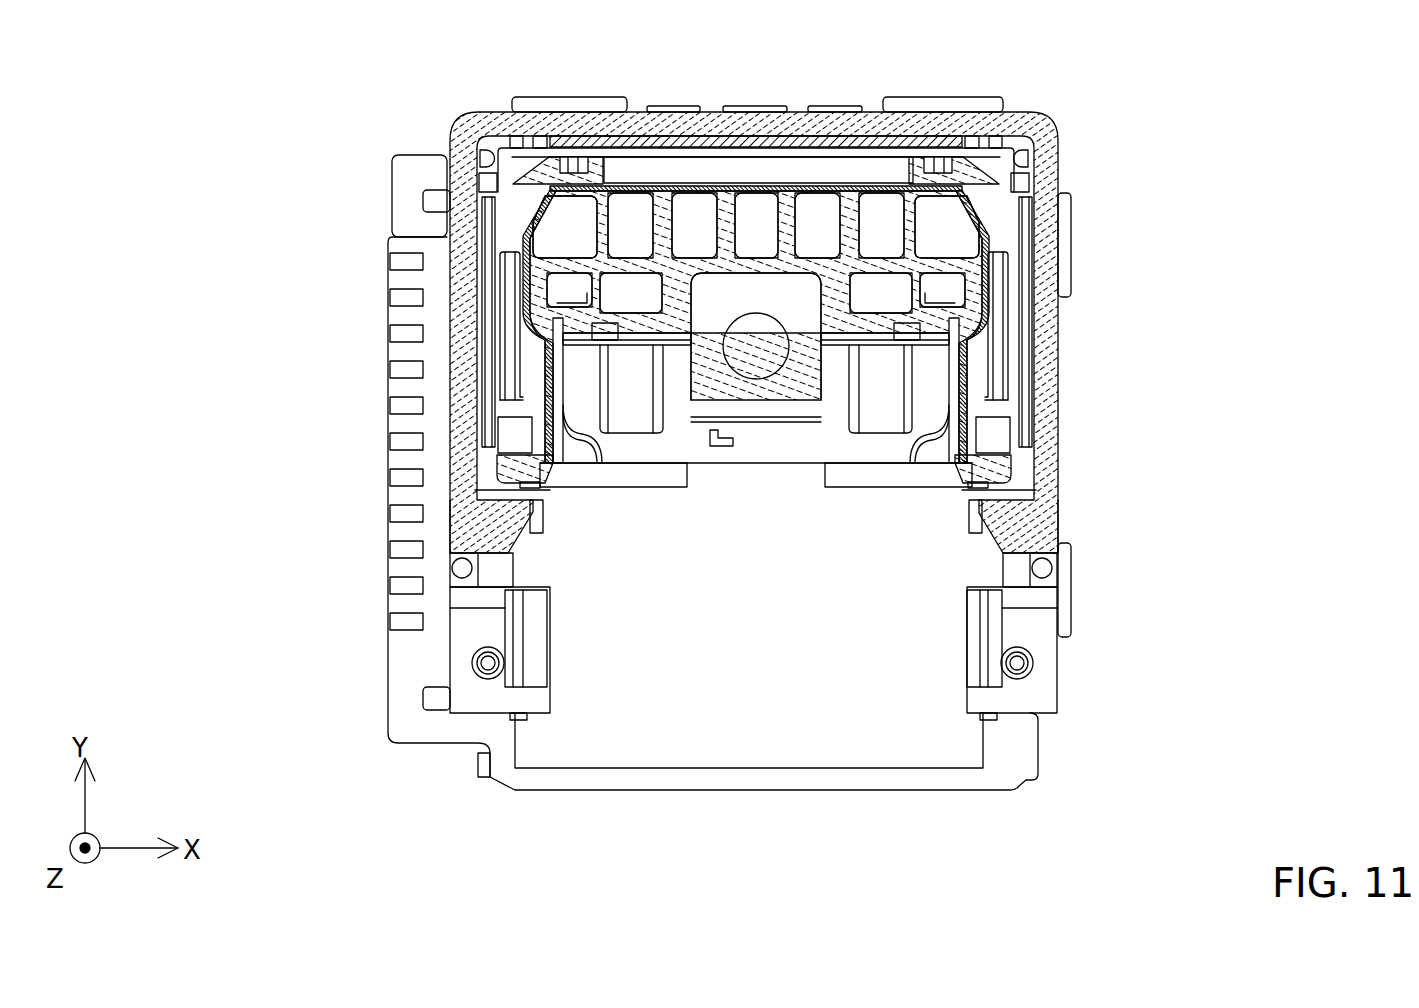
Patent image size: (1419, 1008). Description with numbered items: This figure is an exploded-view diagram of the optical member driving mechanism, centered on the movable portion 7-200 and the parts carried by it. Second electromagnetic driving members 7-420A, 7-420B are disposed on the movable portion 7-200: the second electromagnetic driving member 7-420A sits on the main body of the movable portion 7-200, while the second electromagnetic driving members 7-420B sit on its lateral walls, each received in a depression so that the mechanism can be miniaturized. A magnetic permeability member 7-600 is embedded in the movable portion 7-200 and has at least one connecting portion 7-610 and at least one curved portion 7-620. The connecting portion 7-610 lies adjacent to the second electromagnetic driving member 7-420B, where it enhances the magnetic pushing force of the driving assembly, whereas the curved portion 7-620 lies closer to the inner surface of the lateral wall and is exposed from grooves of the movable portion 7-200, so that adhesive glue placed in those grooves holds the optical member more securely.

The movable portion 7-200 is at (1042, 412).
The second electromagnetic driving member 7-420A is at (708, 173).
The second electromagnetic driving member 7-420B is at (510, 316).
The magnetic permeability member 7-600 is at (853, 186).
The connecting portion 7-610 is at (520, 280).
The curved portion 7-620 is at (500, 410).